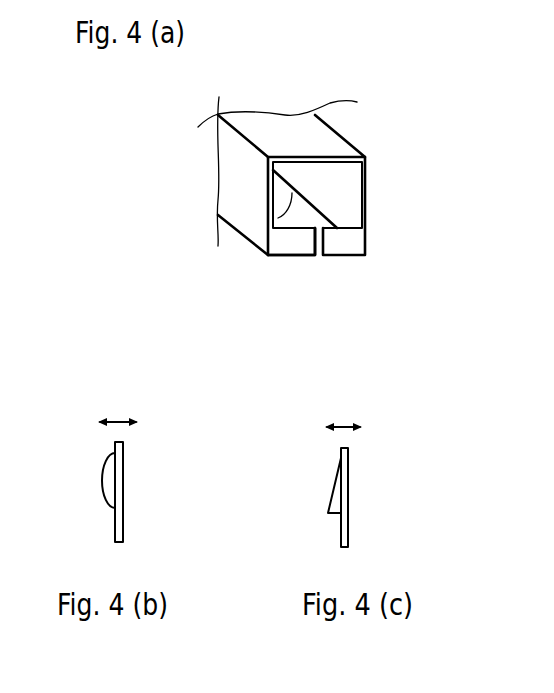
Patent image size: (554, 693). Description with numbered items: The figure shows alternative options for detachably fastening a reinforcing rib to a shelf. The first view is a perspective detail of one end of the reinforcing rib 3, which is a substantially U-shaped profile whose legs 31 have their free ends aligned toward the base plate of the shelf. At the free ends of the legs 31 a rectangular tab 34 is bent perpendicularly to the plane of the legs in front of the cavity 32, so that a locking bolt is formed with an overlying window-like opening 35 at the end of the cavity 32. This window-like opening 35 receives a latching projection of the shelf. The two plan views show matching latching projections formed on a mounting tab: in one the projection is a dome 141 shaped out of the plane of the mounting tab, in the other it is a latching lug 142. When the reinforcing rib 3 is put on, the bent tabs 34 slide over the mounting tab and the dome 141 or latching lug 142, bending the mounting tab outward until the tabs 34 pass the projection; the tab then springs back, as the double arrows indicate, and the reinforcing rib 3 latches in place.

The reinforcing rib 3 is at (279, 180).
The legs 31 is at (228, 156).
The cavity 32 is at (278, 218).
The rectangular tab 34 is at (287, 245).
The window-like opening 35 is at (315, 187).
The dome 141 is at (107, 458).
The latching lug 142 is at (335, 488).